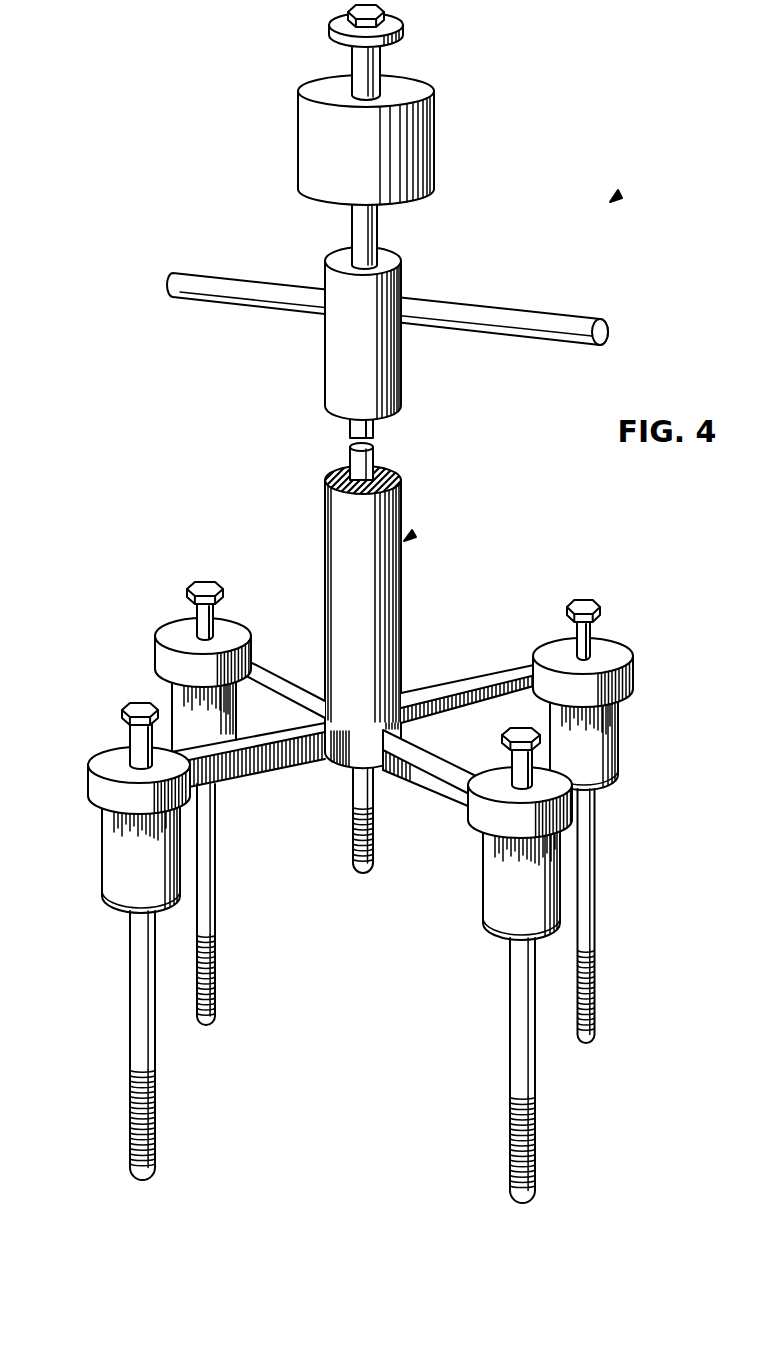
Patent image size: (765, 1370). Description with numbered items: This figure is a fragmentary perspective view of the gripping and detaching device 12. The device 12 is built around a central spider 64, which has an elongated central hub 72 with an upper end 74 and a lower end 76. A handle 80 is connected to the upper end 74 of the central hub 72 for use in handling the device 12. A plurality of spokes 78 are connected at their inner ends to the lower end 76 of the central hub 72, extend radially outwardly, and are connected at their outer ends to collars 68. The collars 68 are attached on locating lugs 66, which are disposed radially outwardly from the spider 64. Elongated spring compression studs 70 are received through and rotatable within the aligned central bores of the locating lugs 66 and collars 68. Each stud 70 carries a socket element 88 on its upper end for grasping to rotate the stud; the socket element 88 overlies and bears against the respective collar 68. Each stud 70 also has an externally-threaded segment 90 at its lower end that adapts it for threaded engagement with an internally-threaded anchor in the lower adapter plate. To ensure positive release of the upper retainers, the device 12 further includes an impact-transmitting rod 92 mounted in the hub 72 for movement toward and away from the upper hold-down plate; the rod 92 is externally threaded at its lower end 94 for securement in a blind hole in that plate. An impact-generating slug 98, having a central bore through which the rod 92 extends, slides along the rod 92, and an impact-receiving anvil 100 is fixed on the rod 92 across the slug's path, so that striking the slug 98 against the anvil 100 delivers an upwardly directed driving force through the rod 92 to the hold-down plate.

The gripping and detaching device 12 is at (610, 202).
The central spider 64 is at (404, 541).
The locating lugs 66 is at (102, 857).
The collars 68 is at (155, 652).
The elongated spring compression studs 70 is at (215, 880).
The central hub 72 is at (403, 512).
The upper end of central hub 74 is at (400, 283).
The lower end of central hub 76 is at (342, 770).
The spokes 78 is at (295, 705).
The handle 80 is at (540, 310).
The socket element 88 is at (205, 582).
The externally-threaded segment 90 is at (212, 1018).
The impact-transmitting rod 92 is at (377, 228).
The lower end of impact-transmitting rod 94 is at (353, 840).
The impact-generating slug 98 is at (437, 140).
The impact-receiving anvil 100 is at (403, 30).